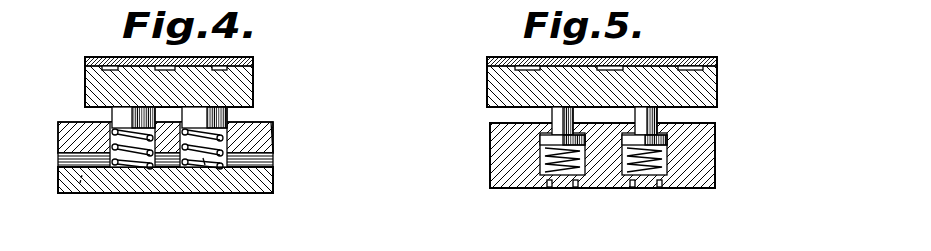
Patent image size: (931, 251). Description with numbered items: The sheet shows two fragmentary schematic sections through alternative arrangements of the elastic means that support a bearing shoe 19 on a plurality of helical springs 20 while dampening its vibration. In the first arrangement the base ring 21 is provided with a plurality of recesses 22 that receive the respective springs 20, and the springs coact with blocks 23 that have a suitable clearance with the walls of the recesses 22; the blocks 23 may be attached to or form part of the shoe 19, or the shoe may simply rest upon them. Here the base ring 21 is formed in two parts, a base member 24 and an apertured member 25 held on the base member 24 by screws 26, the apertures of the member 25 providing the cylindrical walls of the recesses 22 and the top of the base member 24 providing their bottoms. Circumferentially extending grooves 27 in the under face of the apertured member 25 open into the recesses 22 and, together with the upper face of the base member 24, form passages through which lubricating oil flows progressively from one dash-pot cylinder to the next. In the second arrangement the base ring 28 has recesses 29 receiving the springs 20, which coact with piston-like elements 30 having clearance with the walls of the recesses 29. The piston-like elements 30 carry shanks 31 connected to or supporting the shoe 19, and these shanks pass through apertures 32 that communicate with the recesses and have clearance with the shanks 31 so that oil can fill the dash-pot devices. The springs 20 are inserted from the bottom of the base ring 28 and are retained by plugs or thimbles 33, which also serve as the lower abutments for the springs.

In FIG. 4, the bearing shoe 19 is at (232, 91).
In FIG. 5, the bearing shoe 19 is at (700, 90).
In FIG. 4, the helical springs 20 is at (203, 158).
In FIG. 5, the helical springs 20 is at (553, 190).
In FIG. 4, the base ring 21 is at (271, 123).
In FIG. 4, the recesses 22 is at (232, 124).
In FIG. 4, the blocks 23 is at (118, 113).
In FIG. 4, the base member 24 is at (65, 177).
In FIG. 4, the apertured member 25 is at (70, 128).
In FIG. 4, the screws 26 is at (80, 183).
In FIG. 4, the grooves 27 is at (62, 162).
In FIG. 5, the base ring 28 is at (697, 157).
In FIG. 5, the recesses 29 is at (545, 163).
In FIG. 5, the piston-like elements 30 is at (547, 140).
In FIG. 5, the shanks 31 is at (552, 115).
In FIG. 5, the apertures 32 is at (604, 117).
In FIG. 5, the plugs or thimbles 33 is at (640, 189).